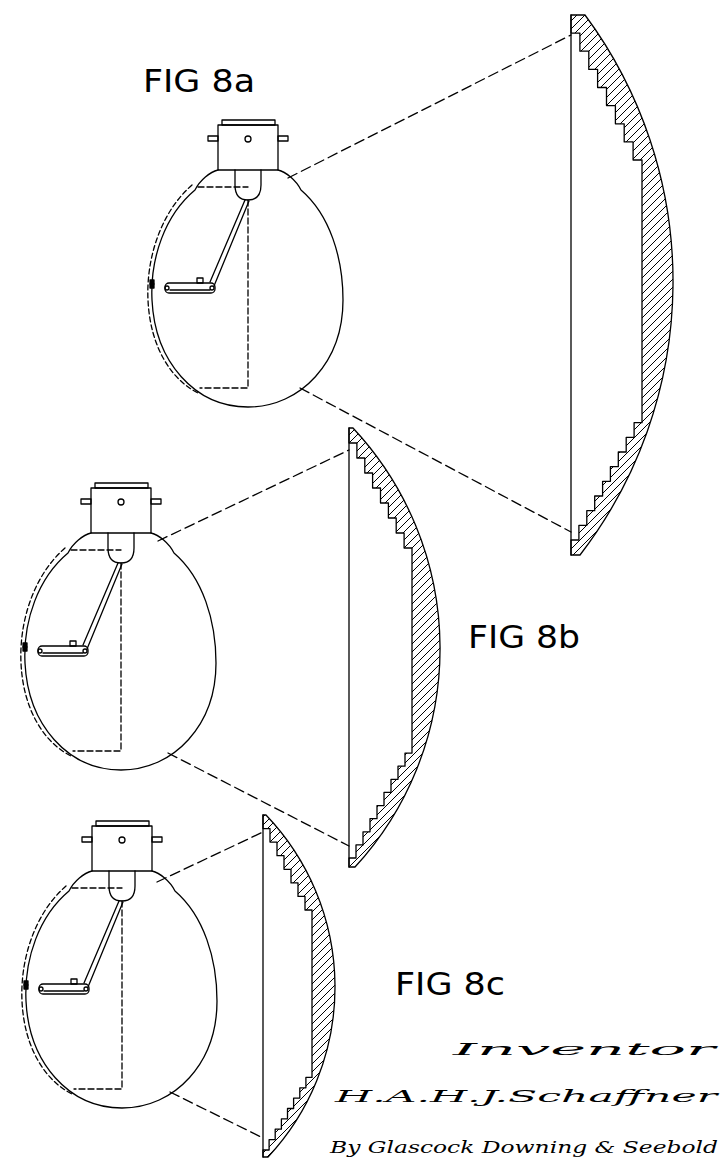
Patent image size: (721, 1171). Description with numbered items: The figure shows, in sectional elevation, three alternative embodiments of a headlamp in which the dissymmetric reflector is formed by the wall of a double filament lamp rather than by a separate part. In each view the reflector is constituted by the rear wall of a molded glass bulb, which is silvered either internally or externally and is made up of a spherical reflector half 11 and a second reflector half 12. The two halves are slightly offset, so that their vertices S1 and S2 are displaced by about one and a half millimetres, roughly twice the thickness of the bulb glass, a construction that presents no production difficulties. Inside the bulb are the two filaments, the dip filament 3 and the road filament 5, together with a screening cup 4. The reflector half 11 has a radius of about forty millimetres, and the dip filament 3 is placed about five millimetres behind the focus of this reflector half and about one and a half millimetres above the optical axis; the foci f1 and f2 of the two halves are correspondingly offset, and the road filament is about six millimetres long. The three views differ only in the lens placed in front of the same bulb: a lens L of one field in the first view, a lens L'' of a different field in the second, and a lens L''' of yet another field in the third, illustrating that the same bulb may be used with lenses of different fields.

In FIG. 8A, the spherical reflector half 11 is at (163, 224).
In FIG. 8B, the spherical reflector half 11 is at (47, 650).
In FIG. 8C, the spherical reflector half 11 is at (48, 990).
In FIG. 8A, the reflector half 12 is at (246, 407).
In FIG. 8B, the reflector half 12 is at (120, 638).
In FIG. 8C, the reflector half 12 is at (121, 979).
In FIG. 8A, the vertex of first reflector half S1 is at (151, 282).
In FIG. 8B, the vertex of first reflector half S1 is at (40, 632).
In FIG. 8C, the vertex of first reflector half S1 is at (39, 971).
In FIG. 8A, the vertex of second reflector half S2 is at (151, 286).
In FIG. 8B, the vertex of second reflector half S2 is at (40, 669).
In FIG. 8C, the vertex of second reflector half S2 is at (38, 1006).
In FIG. 8A, the dip filament 3 is at (201, 279).
In FIG. 8B, the dip filament 3 is at (96, 606).
In FIG. 8C, the dip filament 3 is at (97, 944).
In FIG. 8A, the screening cup 4 is at (201, 294).
In FIG. 8B, the screening cup 4 is at (65, 671).
In FIG. 8C, the screening cup 4 is at (66, 1011).
In FIG. 8A, the road filament 5 is at (181, 282).
In FIG. 8B, the road filament 5 is at (63, 638).
In FIG. 8C, the road filament 5 is at (64, 978).
In FIG. 8A, the focus of first reflector half f1 is at (168, 293).
In FIG. 8B, the focus of first reflector half f1 is at (54, 667).
In FIG. 8C, the focus of first reflector half f1 is at (55, 1004).
In FIG. 8A, the focus of second reflector half f2 is at (214, 288).
In FIG. 8B, the focus of second reflector half f2 is at (97, 660).
In FIG. 8C, the focus of second reflector half f2 is at (100, 1003).
In FIG. 8C, the lens L is at (299, 986).
In FIG. 8B, the lens L'' is at (394, 647).
In FIG. 8A, the lens L''' is at (622, 285).